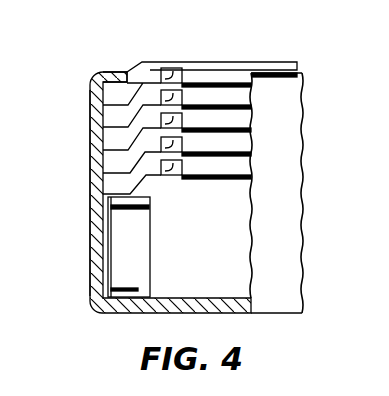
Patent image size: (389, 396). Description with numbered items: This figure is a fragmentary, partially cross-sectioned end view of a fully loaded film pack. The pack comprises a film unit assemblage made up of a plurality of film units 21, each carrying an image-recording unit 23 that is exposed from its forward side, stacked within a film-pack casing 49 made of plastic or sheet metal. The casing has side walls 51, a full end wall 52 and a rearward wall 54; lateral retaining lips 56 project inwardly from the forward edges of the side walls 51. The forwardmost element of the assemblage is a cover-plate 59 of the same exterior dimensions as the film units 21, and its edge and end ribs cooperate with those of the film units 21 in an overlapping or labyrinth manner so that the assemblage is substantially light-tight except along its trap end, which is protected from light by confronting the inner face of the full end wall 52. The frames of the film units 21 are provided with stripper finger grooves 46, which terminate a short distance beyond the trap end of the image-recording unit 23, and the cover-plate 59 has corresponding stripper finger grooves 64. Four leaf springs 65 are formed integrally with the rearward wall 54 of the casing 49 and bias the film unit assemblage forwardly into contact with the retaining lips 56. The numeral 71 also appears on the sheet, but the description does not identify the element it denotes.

The film unit 21 is at (238, 165).
The image-recording unit 23 is at (223, 178).
The stripper finger grooves 46 is at (168, 99).
The film-pack casing 49 is at (80, 100).
The side walls 51 is at (90, 172).
The full end wall 52 is at (287, 223).
The rearward wall 54 is at (219, 296).
The lateral retaining lips 56 is at (115, 71).
The cover-plate 59 is at (217, 62).
The stripper finger grooves 64 is at (171, 76).
The leaf springs 65 is at (135, 252).
The lead 71 is at (0, 314).